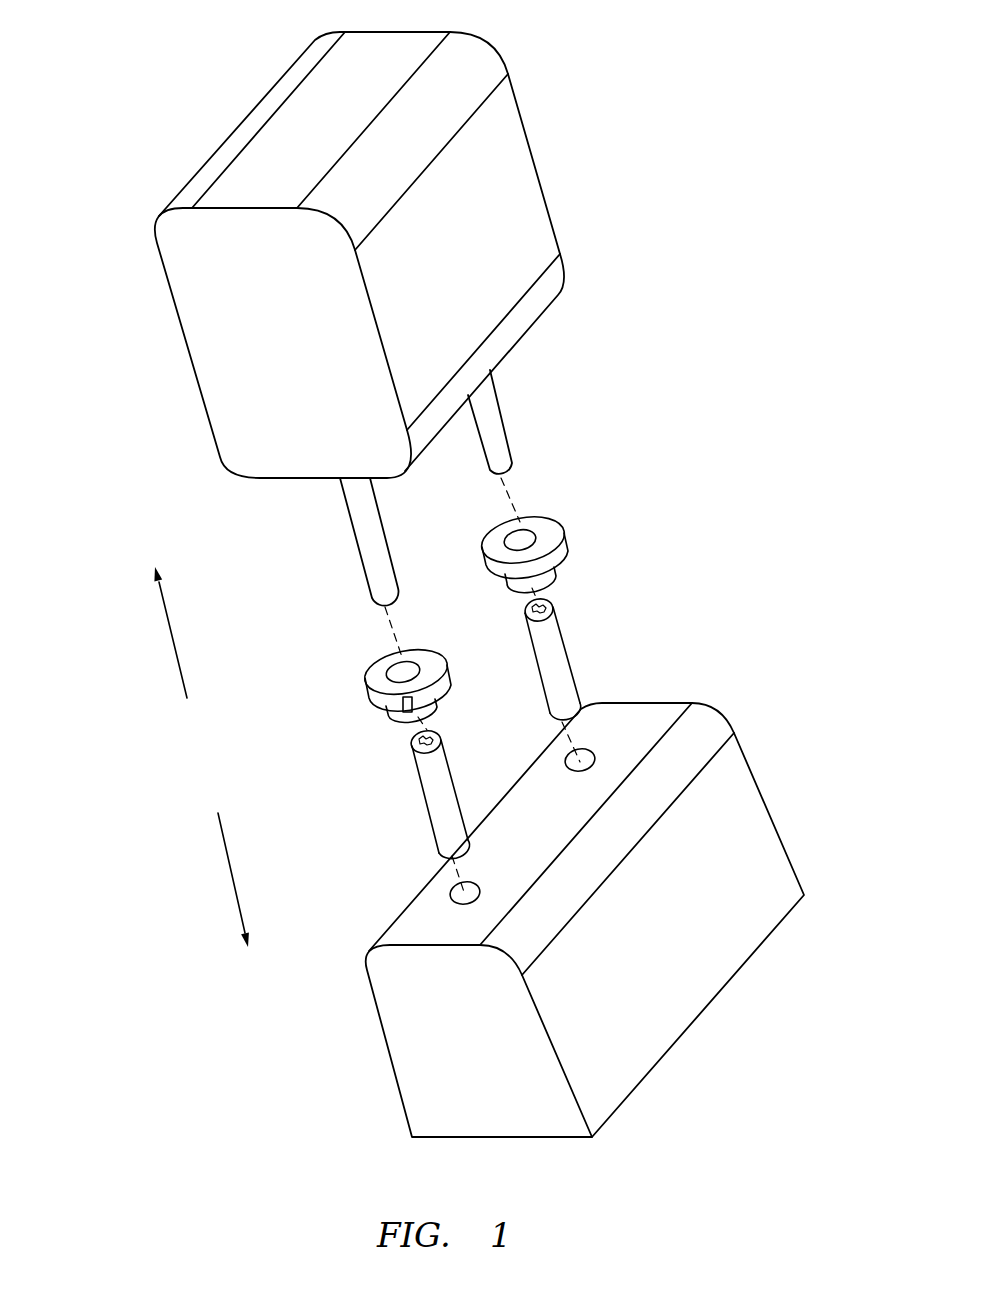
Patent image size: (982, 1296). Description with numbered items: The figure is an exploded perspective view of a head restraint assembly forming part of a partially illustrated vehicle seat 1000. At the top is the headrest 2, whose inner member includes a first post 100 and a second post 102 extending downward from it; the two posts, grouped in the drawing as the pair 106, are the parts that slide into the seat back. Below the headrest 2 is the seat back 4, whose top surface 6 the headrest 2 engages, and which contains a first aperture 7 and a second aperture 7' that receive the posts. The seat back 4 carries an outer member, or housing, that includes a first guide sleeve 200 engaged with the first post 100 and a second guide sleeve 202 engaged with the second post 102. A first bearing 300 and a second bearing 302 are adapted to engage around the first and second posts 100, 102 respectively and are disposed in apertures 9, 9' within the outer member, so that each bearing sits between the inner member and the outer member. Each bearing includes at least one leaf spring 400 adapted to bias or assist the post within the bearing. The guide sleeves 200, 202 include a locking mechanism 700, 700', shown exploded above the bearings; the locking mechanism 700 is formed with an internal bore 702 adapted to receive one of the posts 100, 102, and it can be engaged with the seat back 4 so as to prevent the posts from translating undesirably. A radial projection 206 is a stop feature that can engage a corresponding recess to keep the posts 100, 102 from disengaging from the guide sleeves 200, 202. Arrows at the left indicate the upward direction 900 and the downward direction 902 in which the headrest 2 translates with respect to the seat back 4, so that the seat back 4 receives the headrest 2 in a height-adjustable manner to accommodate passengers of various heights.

The vehicle seat 1000 is at (747, 47).
The headrest 2 is at (550, 212).
The first post 100 is at (352, 527).
The second post 102 is at (505, 420).
The posts 106 is at (427, 493).
The locking mechanism 700 is at (370, 683).
The locking mechanism 700' is at (578, 522).
The internal bore 702 is at (533, 537).
The aperture 9 is at (411, 779).
The aperture 9' is at (587, 639).
The first bearing 300 is at (433, 731).
The second bearing 302 is at (552, 605).
The first guide sleeve 200 is at (418, 792).
The second guide sleeve 202 is at (575, 678).
The radial projection 206 is at (437, 855).
The leaf spring 400 is at (527, 610).
The top surface 6 is at (592, 906).
The seat back 4 is at (763, 790).
The first aperture 7 is at (422, 902).
The second aperture 7' is at (600, 748).
The upward direction 900 is at (172, 640).
The downward direction 902 is at (228, 865).